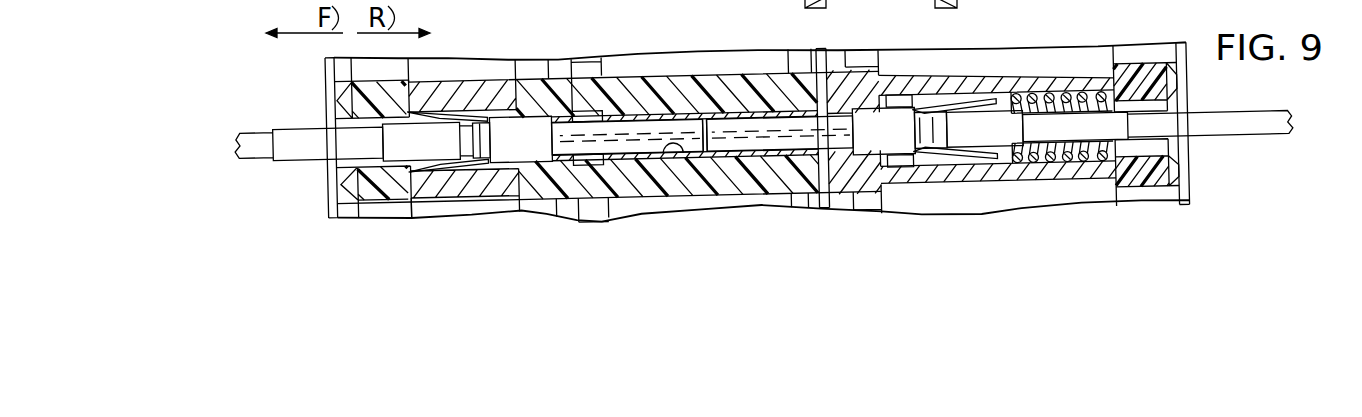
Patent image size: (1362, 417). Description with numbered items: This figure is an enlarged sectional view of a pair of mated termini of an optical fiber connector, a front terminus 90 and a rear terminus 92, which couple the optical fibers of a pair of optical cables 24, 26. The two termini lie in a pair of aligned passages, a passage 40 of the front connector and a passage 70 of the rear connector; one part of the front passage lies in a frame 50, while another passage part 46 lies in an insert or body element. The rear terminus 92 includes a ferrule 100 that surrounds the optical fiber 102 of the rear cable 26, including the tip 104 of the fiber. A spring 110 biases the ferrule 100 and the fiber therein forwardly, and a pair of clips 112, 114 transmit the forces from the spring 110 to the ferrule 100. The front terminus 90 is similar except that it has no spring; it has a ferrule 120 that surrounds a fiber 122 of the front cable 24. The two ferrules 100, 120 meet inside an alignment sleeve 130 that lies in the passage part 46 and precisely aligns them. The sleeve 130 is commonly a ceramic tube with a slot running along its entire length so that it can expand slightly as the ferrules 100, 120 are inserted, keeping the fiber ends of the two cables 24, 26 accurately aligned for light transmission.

The optical cable 24 is at (260, 131).
The optical cable 26 is at (1241, 134).
The passage 40 is at (488, 165).
The passage part 46 is at (671, 148).
The frame 50 is at (466, 54).
The passage 70 is at (962, 160).
The front terminus 90 is at (542, 165).
The rear terminus 92 is at (867, 160).
The ferrule 100 is at (835, 122).
The optical fiber 102 is at (793, 143).
The tip 104 is at (693, 157).
The spring 110 is at (1075, 97).
The clip 112 is at (907, 97).
The clip 114 is at (948, 107).
The ferrule 120 is at (630, 128).
The fiber 122 is at (645, 143).
The alignment sleeve 130 is at (707, 116).